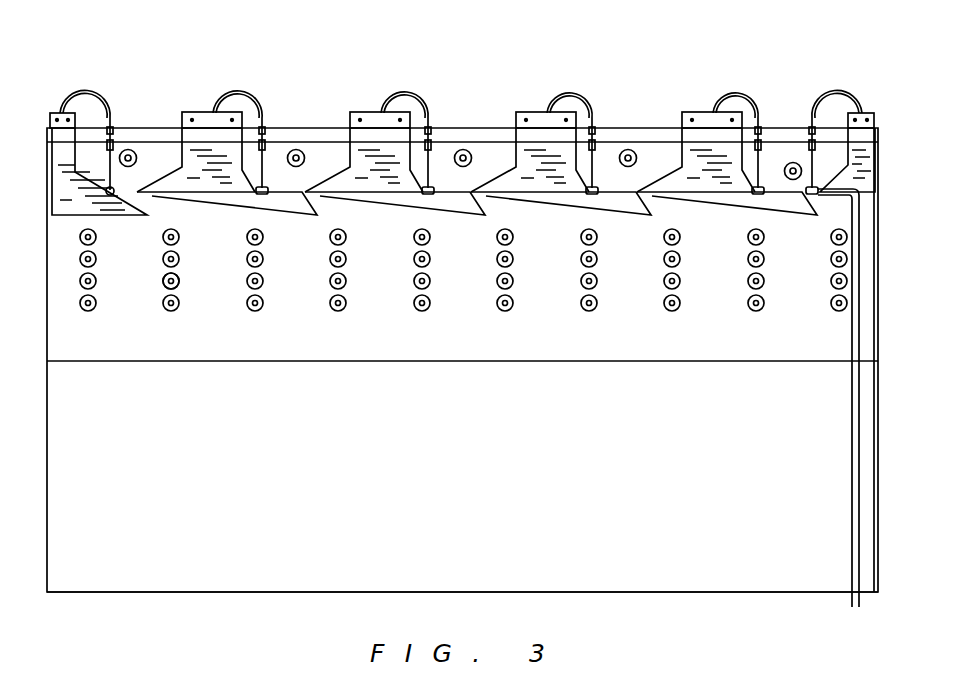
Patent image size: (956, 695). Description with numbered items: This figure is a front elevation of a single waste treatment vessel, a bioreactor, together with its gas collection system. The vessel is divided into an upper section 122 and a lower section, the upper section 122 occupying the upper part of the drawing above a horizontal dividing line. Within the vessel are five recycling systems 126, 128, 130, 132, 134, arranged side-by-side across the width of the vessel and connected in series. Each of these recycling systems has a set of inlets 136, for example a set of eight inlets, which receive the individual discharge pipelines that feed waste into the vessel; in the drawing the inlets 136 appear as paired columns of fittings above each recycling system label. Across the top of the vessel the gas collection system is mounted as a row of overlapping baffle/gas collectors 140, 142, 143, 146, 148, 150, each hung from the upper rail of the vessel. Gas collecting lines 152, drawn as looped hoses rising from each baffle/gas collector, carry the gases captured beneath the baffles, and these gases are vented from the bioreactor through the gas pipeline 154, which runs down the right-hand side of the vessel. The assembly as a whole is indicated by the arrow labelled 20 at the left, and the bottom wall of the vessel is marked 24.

The waste receptacle assembly 20 is at (42, 363).
The bottom wall 24 is at (102, 555).
The upper section 122 is at (80, 342).
The recycling system 126 is at (170, 311).
The recycling system 128 is at (337, 311).
The recycling system 130 is at (504, 311).
The recycling system 132 is at (671, 311).
The recycling system 134 is at (838, 311).
The set of inlets 136 is at (179, 273).
The baffle/gas collector 140 is at (50, 150).
The baffle/gas collector 142 is at (203, 112).
The bracket 143 is at (372, 112).
The baffle/gas collector 146 is at (533, 112).
The baffle/gas collector 148 is at (702, 112).
The baffle/gas collector 150 is at (865, 112).
The gas collecting line 152 is at (835, 93).
The gas pipeline 154 is at (851, 436).